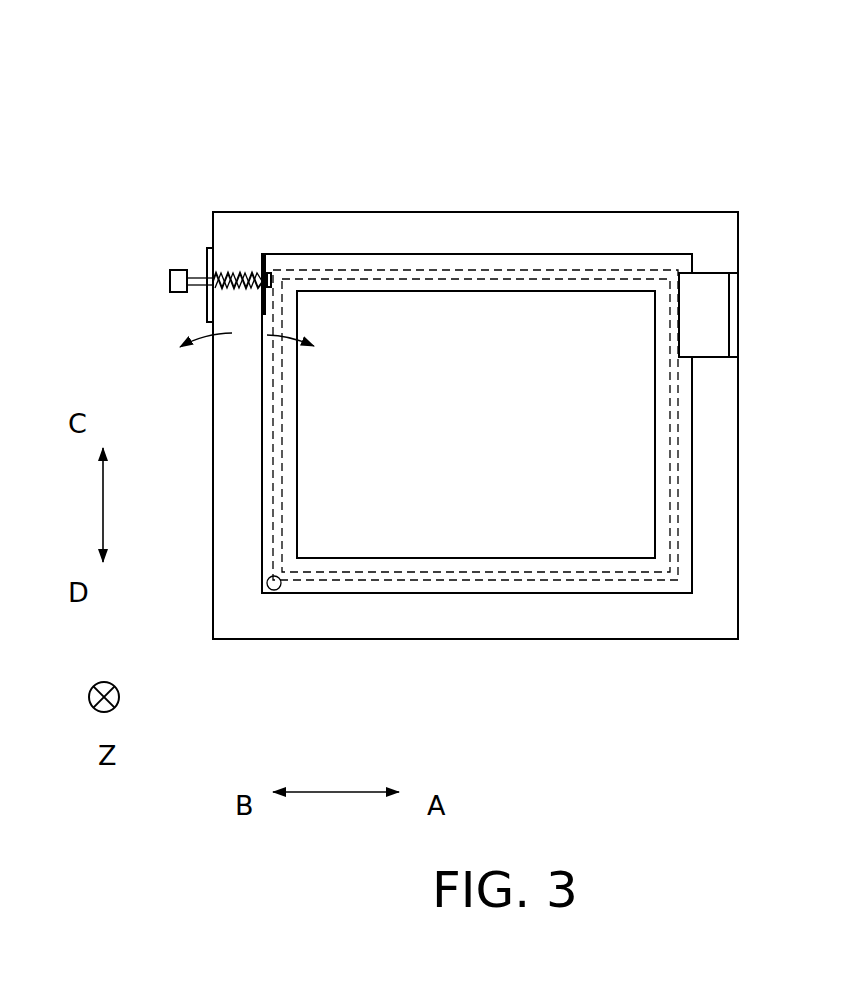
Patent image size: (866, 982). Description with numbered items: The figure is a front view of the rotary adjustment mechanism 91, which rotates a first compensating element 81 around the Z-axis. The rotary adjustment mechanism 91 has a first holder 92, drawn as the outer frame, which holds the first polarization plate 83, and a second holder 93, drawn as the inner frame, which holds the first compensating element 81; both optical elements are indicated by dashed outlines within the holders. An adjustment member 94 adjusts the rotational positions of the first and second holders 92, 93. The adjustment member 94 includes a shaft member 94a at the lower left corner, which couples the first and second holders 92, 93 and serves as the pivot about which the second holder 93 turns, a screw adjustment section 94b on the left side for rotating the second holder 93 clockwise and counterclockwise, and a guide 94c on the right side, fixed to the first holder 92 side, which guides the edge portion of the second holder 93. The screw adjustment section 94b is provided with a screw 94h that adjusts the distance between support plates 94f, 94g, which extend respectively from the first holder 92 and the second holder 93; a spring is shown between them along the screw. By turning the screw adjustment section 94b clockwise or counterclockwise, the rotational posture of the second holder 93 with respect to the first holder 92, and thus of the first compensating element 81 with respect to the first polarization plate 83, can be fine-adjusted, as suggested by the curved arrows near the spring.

The rotary adjustment mechanism 91 is at (752, 197).
The second holder 93 is at (343, 254).
The first holder 92 is at (443, 232).
The first polarization plate 83 is at (535, 268).
The first compensating element 81 is at (607, 275).
The adjustment member 94 is at (178, 130).
The shaft member 94a is at (277, 589).
The screw adjustment section 94b is at (188, 216).
The guide 94c is at (738, 295).
The support plate 94f is at (234, 228).
The support plate 94g is at (267, 253).
The screw 94h is at (170, 282).